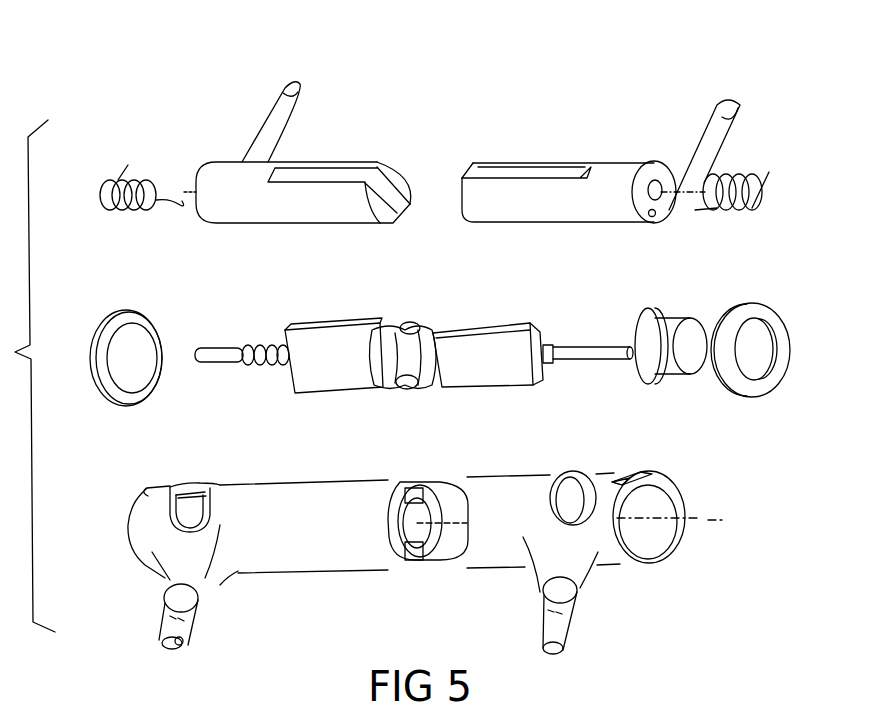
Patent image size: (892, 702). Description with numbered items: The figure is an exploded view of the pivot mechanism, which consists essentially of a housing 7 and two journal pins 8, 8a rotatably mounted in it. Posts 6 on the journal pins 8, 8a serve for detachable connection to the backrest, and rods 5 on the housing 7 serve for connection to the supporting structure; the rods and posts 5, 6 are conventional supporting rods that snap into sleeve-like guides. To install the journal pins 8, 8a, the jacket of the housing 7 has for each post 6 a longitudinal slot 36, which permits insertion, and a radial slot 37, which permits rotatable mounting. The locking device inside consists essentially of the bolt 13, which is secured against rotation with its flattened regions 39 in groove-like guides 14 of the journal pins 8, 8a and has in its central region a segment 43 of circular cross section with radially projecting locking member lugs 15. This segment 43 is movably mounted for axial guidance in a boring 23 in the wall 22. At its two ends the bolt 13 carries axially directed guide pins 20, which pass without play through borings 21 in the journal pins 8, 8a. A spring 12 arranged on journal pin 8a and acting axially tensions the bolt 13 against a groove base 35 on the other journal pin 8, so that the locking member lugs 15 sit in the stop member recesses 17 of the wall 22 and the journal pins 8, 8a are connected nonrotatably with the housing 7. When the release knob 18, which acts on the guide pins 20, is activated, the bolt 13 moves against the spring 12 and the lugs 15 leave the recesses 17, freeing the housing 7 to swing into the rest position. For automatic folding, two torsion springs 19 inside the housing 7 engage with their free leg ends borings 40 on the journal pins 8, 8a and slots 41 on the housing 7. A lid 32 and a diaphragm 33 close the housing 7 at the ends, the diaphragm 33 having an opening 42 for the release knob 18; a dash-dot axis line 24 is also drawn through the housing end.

The rods 5 is at (165, 630).
The posts 6 is at (270, 120).
The housing 7 is at (416, 546).
The journal pin 8 is at (608, 155).
The journal pin 8a is at (330, 200).
The spring 12 is at (250, 345).
The bolt 13 is at (410, 337).
The groove-like guides 14 is at (470, 170).
The locking member lugs 15 is at (412, 330).
The stop member recesses 17 is at (420, 492).
The release knob 18 is at (683, 330).
The torsion springs 19 is at (118, 178).
The guide pins 20 is at (210, 350).
The borings 21 is at (656, 182).
The wall 22 is at (411, 520).
The boring 23 is at (405, 513).
The axis 24 is at (705, 520).
The lid 32 is at (118, 342).
The diaphragm 33 is at (778, 331).
The groove base 35 is at (578, 170).
The longitudinal slot 36 is at (655, 482).
The radial slot 37 is at (187, 508).
The flattened regions 39 is at (505, 345).
The borings 40 is at (657, 214).
The slots 41 is at (143, 493).
The opening 42 is at (758, 352).
The segment 43 is at (388, 345).